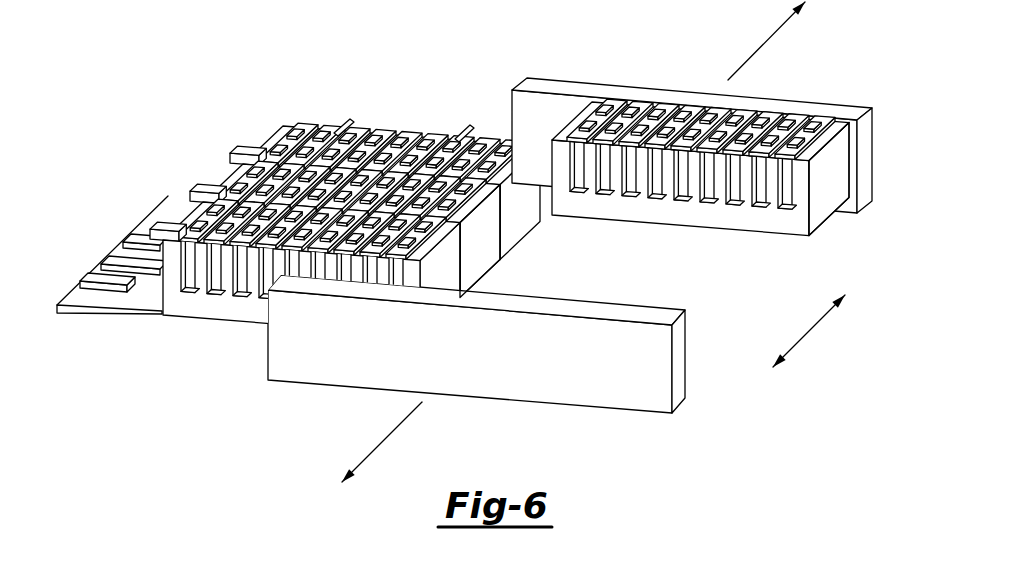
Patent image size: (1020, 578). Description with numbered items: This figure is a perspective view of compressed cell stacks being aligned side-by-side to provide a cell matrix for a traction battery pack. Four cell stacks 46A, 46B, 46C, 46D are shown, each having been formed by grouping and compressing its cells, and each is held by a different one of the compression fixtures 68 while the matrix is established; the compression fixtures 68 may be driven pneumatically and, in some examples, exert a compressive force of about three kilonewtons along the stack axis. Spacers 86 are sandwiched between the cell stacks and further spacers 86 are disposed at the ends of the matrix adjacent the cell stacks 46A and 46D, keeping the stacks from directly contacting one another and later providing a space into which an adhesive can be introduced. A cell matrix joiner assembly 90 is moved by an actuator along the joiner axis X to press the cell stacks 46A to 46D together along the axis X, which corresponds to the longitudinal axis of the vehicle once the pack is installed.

The cell stack 46A is at (152, 214).
The cell stack 46B is at (199, 176).
The cell stack 46C is at (238, 137).
The cell stack 46D is at (544, 109).
The compression fixture 68 is at (433, 266).
The spacer 86 is at (218, 312).
The cell matrix joiner assembly 90 is at (512, 106).
The joiner axis X is at (808, 332).